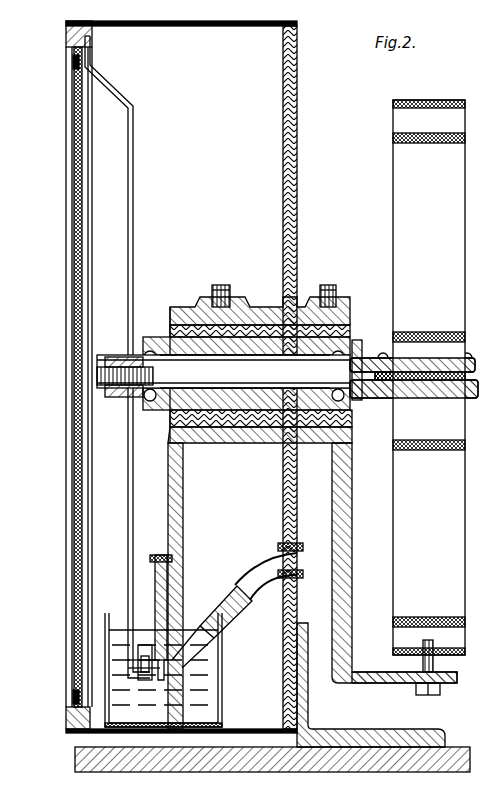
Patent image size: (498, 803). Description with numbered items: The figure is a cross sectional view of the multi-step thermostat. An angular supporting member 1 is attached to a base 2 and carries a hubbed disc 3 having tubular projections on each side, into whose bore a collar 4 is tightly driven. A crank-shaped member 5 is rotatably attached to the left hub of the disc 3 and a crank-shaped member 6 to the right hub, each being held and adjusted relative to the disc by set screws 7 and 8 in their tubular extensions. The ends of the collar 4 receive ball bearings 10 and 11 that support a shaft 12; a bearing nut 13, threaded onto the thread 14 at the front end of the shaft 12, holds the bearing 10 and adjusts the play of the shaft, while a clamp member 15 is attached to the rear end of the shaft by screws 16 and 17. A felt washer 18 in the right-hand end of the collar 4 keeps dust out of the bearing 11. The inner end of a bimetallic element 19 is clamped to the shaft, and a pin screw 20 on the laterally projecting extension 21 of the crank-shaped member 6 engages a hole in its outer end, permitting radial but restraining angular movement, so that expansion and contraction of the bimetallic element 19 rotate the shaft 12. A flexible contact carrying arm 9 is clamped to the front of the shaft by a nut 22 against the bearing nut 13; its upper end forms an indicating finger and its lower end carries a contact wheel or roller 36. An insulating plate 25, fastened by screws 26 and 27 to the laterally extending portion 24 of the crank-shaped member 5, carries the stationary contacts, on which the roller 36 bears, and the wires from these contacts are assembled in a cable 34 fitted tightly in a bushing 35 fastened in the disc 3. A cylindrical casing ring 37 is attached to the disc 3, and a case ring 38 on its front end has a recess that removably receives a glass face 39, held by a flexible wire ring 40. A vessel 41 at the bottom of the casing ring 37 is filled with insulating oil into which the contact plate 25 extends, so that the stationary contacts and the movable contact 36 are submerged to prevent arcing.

The angular supporting member 1 is at (336, 729).
The base 2 is at (450, 772).
The hubbed disc 3 is at (297, 196).
The collar 4 is at (168, 325).
The crank-shaped member 5 is at (214, 443).
The crank-shaped member 6 is at (352, 520).
The set screw 7 is at (228, 290).
The set screw 8 is at (330, 290).
The contact carrying arm 9 is at (131, 213).
The ball bearing 10 is at (150, 378).
The ball bearing 11 is at (300, 368).
The shaft 12 is at (256, 443).
The bearing nut 13 is at (135, 408).
The thread 14 is at (100, 375).
The clamp member 15 is at (440, 358).
The screw 16 is at (384, 357).
The screw 17 is at (468, 358).
The felt washer 18 is at (356, 405).
The bimetallic element 19 is at (405, 152).
The pin screw 20 is at (432, 695).
The laterally projecting extension 21 is at (386, 683).
The nut 22 is at (110, 395).
The laterally extending portion 24 is at (184, 556).
The insulating plate 25 is at (128, 600).
The screw 26 is at (152, 557).
The screw 27 is at (105, 641).
The cable 34 is at (232, 580).
The bushing 35 is at (300, 548).
The contact wheel or roller 36 is at (140, 682).
The cylindrical casing ring 37 is at (200, 26).
The case ring 38 is at (92, 38).
The glass face 39 is at (78, 153).
The flexible wire ring 40 is at (73, 62).
The vessel 41 is at (112, 620).